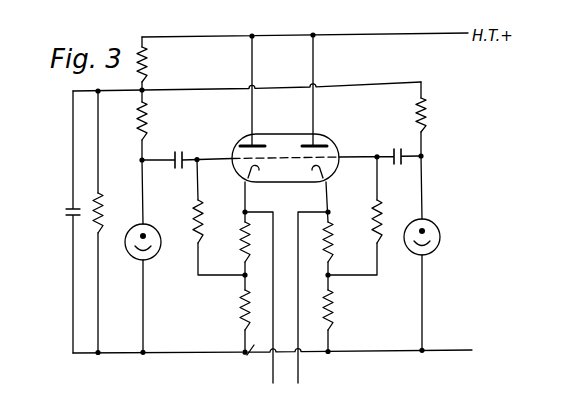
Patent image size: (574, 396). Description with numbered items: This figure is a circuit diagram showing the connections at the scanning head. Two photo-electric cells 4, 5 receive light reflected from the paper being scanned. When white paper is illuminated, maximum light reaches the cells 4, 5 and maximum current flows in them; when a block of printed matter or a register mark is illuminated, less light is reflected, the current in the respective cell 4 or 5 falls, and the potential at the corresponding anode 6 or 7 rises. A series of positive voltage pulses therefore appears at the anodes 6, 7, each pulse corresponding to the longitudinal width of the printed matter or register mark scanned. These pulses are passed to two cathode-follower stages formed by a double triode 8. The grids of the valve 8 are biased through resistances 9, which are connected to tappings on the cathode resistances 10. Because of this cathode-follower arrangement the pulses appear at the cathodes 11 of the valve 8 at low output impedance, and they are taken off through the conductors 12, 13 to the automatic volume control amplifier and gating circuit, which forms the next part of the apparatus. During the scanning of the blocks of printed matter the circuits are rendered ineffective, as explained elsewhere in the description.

The photo-electric cell 4 is at (150, 256).
The photo-electric cell 5 is at (433, 253).
The anode 6 is at (147, 235).
The anode 7 is at (431, 227).
The double triode 8 is at (329, 136).
The resistance 9 is at (203, 233).
The cathode resistance 10 is at (242, 307).
The cathode 11 is at (250, 173).
The conductor 12 is at (273, 373).
The conductor 13 is at (298, 372).